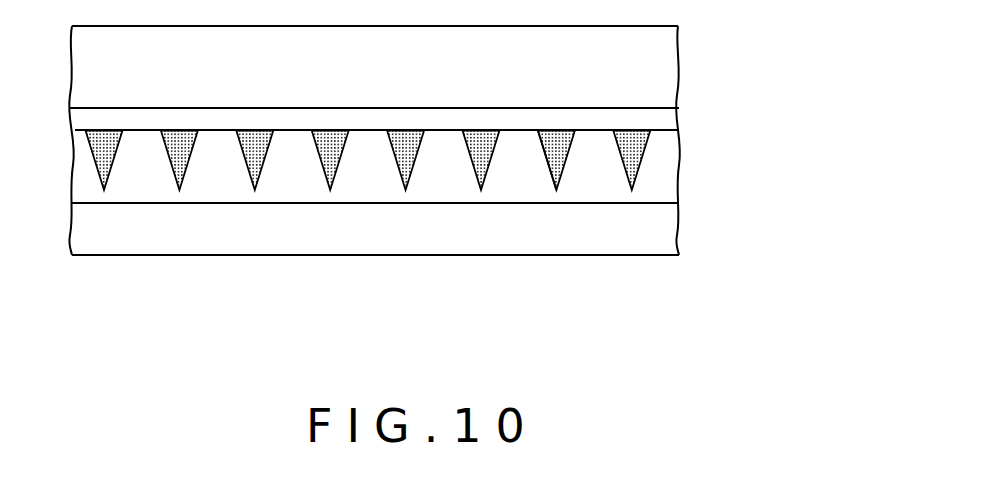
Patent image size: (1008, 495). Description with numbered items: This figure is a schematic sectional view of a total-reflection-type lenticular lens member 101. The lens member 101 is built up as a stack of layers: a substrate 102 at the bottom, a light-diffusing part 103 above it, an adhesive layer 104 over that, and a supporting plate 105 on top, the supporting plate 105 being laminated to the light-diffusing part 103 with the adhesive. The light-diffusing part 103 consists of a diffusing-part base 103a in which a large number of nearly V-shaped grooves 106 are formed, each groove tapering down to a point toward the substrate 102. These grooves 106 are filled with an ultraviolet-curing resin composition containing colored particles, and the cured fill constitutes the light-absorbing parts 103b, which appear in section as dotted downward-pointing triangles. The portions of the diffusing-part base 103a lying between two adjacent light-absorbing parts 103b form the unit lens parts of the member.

The total-reflection-type lenticular lens member 101 is at (310, 262).
The substrate 102 is at (667, 235).
The light-diffusing part 103 is at (424, 187).
The diffusing-part base 103a is at (513, 170).
The light-absorbing part 103b is at (572, 150).
The adhesive layer 104 is at (670, 120).
The supporting plate 105 is at (670, 65).
The nearly V-shaped groove 106 is at (555, 167).